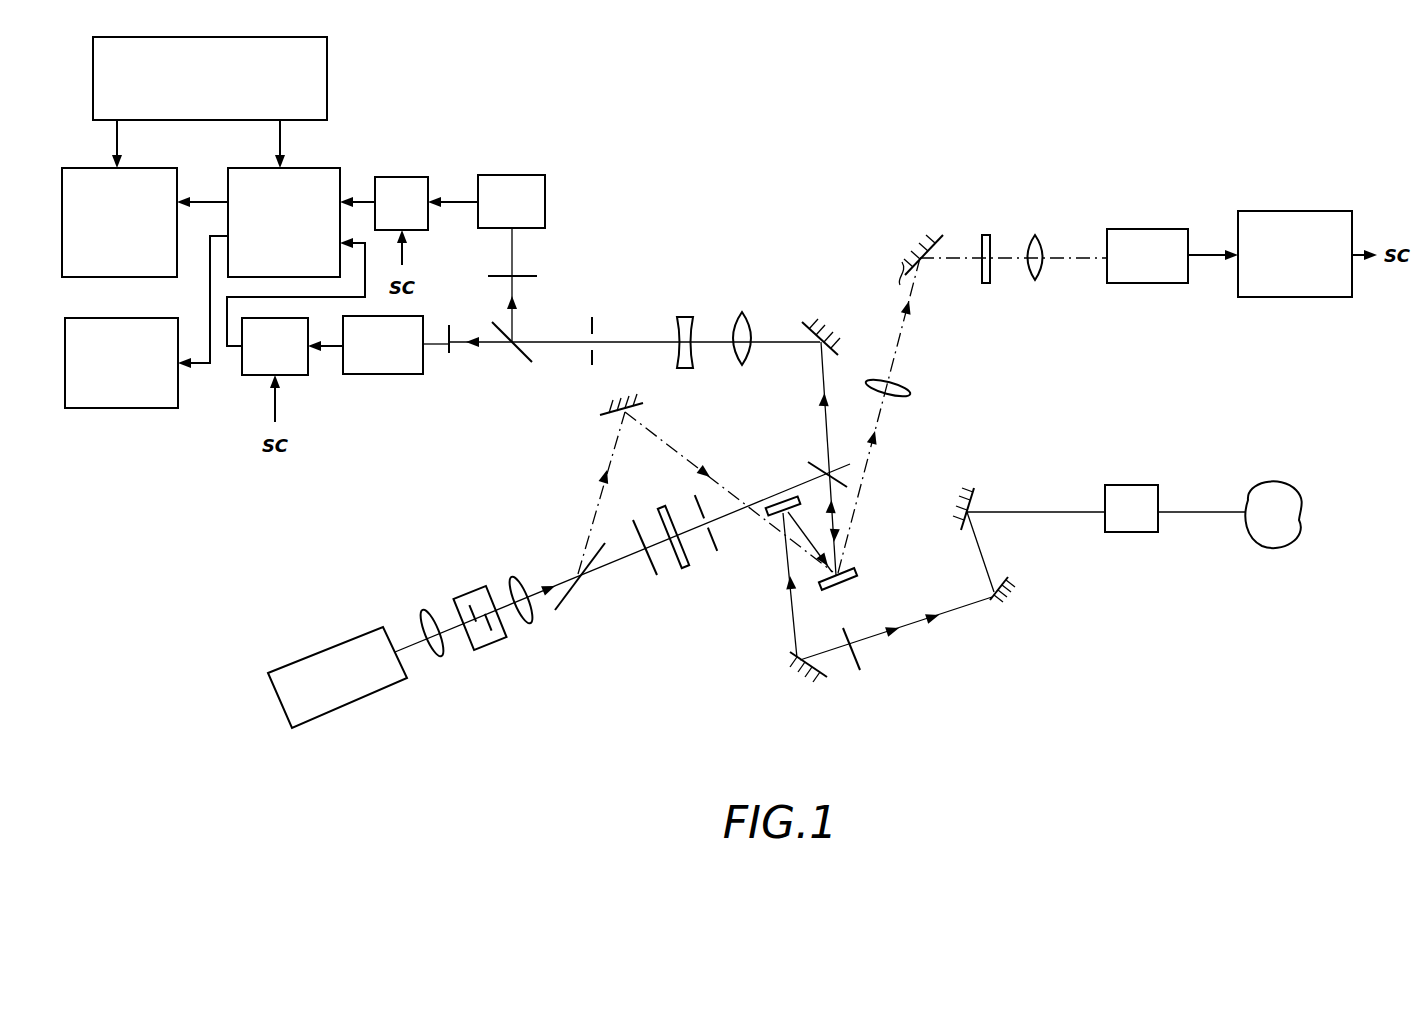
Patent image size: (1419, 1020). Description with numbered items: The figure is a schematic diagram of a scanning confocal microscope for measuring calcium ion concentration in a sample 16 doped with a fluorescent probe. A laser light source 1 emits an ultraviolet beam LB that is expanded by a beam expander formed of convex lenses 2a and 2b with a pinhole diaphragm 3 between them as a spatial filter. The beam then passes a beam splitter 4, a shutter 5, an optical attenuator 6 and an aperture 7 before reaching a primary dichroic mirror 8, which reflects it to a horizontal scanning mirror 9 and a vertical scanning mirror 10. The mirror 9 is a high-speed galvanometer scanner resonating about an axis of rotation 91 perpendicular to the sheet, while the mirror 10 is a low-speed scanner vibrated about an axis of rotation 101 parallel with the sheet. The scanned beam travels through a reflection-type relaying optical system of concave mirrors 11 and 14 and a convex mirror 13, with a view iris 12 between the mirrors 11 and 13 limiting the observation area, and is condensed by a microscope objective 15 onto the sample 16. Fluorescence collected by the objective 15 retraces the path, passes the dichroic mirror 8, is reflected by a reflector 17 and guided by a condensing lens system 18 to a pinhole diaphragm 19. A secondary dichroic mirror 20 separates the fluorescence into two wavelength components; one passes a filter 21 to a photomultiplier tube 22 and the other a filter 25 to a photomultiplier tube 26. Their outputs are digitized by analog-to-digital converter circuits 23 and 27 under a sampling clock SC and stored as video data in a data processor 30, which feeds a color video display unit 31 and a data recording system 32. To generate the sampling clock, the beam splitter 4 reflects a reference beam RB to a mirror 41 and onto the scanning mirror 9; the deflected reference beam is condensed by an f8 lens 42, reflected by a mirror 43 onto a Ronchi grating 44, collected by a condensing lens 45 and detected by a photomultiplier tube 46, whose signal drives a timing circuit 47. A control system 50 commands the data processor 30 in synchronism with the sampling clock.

The laser light source 1 is at (333, 702).
The convex lens 2a is at (437, 656).
The convex lens 2b is at (527, 620).
The pinhole diaphragm 3 is at (485, 646).
The beam splitter 4 is at (560, 604).
The shutter 5 is at (650, 578).
The optical attenuator 6 is at (683, 570).
The aperture 7 is at (716, 553).
The primary dichroic mirror 8 is at (815, 458).
The horizontal scanning mirror 9 is at (855, 568).
The vertical scanning mirror 10 is at (778, 516).
The concave mirror 11 is at (825, 678).
The view iris 12 is at (862, 668).
The convex mirror 13 is at (988, 604).
The concave mirror 14 is at (976, 496).
The microscope objective 15 is at (1130, 532).
The sample 16 is at (1262, 548).
The reflector 17 is at (806, 320).
The condensing lens system 18 is at (675, 305).
The pinhole diaphragm 19 is at (597, 322).
The secondary dichroic mirror 20 is at (520, 368).
The filter 21 is at (455, 355).
The photomultiplier tube 22 is at (397, 374).
The analog-to-digital converter circuit 23 is at (292, 375).
The filter 25 is at (540, 275).
The photomultiplier tube 26 is at (533, 175).
The analog-to-digital converter circuit 27 is at (410, 177).
The data processor 30 is at (300, 168).
The color video display unit 31 is at (150, 408).
The data recording system 32 is at (140, 168).
The mirror 41 is at (605, 416).
The f8 lens 42 is at (905, 386).
The mirror 43 is at (928, 248).
The Ronchi grating 44 is at (988, 235).
The condensing lens 45 is at (1040, 242).
The photomultiplier tube 46 is at (1165, 229).
The timing circuit 47 is at (1312, 211).
The control system 50 is at (327, 62).
The axis of rotation 91 is at (860, 576).
The axis of rotation 101 is at (780, 500).